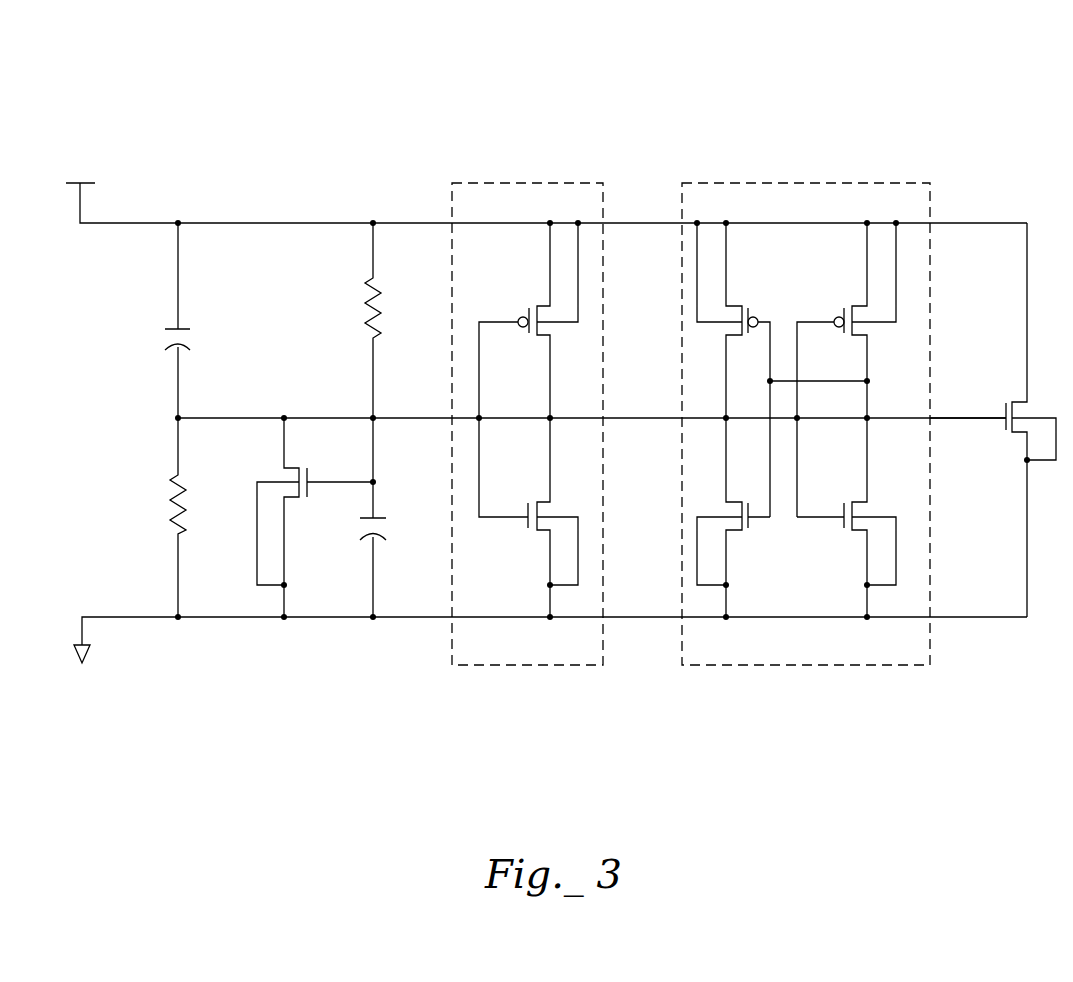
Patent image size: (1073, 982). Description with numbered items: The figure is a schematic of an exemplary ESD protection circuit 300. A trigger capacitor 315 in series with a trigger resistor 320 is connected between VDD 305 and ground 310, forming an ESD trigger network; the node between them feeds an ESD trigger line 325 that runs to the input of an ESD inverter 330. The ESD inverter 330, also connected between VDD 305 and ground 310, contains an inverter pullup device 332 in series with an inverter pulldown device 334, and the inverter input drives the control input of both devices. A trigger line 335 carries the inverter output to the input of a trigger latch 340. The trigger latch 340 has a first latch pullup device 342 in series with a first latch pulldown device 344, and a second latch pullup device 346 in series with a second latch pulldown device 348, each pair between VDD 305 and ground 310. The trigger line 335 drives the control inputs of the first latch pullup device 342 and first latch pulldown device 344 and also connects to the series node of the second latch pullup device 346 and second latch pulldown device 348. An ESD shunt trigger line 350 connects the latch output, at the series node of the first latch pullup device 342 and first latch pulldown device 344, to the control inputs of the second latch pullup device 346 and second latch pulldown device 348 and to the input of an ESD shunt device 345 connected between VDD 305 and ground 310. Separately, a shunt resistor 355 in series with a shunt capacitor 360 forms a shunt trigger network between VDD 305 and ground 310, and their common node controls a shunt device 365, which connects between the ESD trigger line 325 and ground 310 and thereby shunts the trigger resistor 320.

The ESD protection circuit 300 is at (743, 58).
The VDD 305 is at (92, 182).
The ground 310 is at (81, 640).
The trigger capacitor 315 is at (188, 346).
The trigger resistor 320 is at (188, 500).
The ESD trigger line 325 is at (323, 417).
The ESD inverter 330 is at (582, 182).
The inverter pullup device 332 is at (533, 305).
The inverter pulldown device 334 is at (531, 533).
The trigger line 335 is at (652, 417).
The trigger latch 340 is at (908, 182).
The first latch pullup device 342 is at (851, 305).
The first latch pulldown device 344 is at (844, 533).
The ESD shunt device 345 is at (1001, 430).
The second latch pullup device 346 is at (744, 305).
The second latch pulldown device 348 is at (746, 533).
The ESD shunt trigger line 350 is at (965, 417).
The shunt resistor 355 is at (384, 301).
The shunt capacitor 360 is at (387, 530).
The shunt device 365 is at (293, 468).